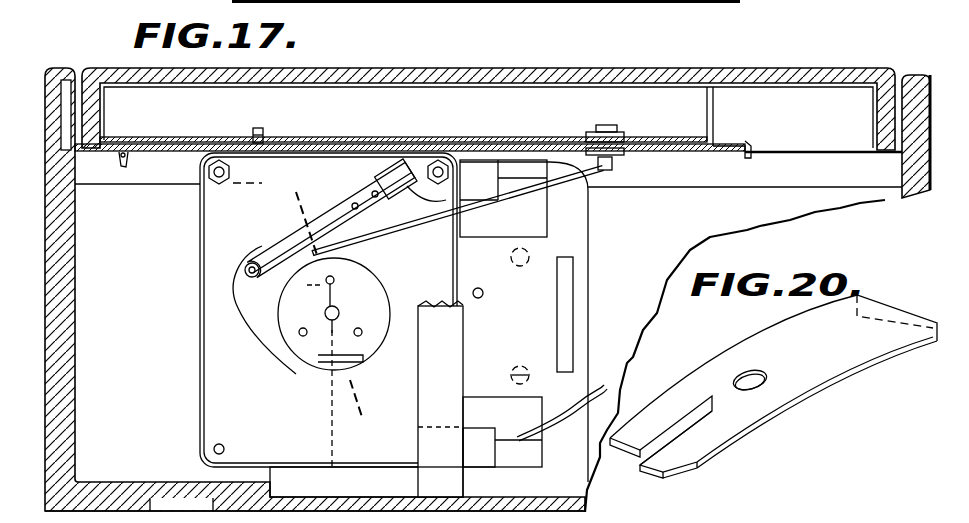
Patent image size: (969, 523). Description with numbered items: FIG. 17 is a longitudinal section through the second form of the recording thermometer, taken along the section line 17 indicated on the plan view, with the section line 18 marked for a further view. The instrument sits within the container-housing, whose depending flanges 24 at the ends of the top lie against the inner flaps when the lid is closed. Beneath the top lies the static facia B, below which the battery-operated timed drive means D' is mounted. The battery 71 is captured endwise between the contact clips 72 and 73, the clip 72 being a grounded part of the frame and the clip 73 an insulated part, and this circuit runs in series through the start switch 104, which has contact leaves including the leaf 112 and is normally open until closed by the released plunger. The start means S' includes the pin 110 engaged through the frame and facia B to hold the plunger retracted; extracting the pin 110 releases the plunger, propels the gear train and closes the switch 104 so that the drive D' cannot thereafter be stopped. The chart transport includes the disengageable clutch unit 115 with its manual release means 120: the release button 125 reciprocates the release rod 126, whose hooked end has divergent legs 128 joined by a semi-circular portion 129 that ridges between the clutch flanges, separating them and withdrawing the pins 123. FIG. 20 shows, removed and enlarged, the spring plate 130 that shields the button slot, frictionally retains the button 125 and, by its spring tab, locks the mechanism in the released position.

In FIG. 17, the inner end 17 is at (452, 23).
In FIG. 17, the bottom extension 18 is at (331, 198).
In FIG. 17, the depending flange 24 is at (101, 100).
In FIG. 17, the battery 71 is at (526, 227).
In FIG. 17, the contact clip 72 is at (513, 177).
In FIG. 17, the contact clip 73 is at (527, 458).
In FIG. 17, the start switch 104 is at (350, 193).
In FIG. 17, the pin 110 is at (259, 128).
In FIG. 17, the contact leaf 112 is at (291, 240).
In FIG. 17, the clutch unit 115 is at (282, 329).
In FIG. 17, the manual release means 120 is at (271, 293).
In FIG. 17, the pin 123 is at (285, 329).
In FIG. 17, the release button 125 is at (620, 128).
In FIG. 17, the release rod 126 is at (413, 233).
In FIG. 17, the divergent leg 128 is at (367, 265).
In FIG. 17, the semi-circular portion 129 is at (271, 338).
In FIG. 17, the spring plate 130 is at (729, 142).
In FIG. 20, the spring plate 130 is at (797, 370).
In FIG. 17, the facia B is at (372, 134).
In FIG. 17, the timed drive means D' is at (331, 325).
In FIG. 17, the start means S' is at (298, 109).